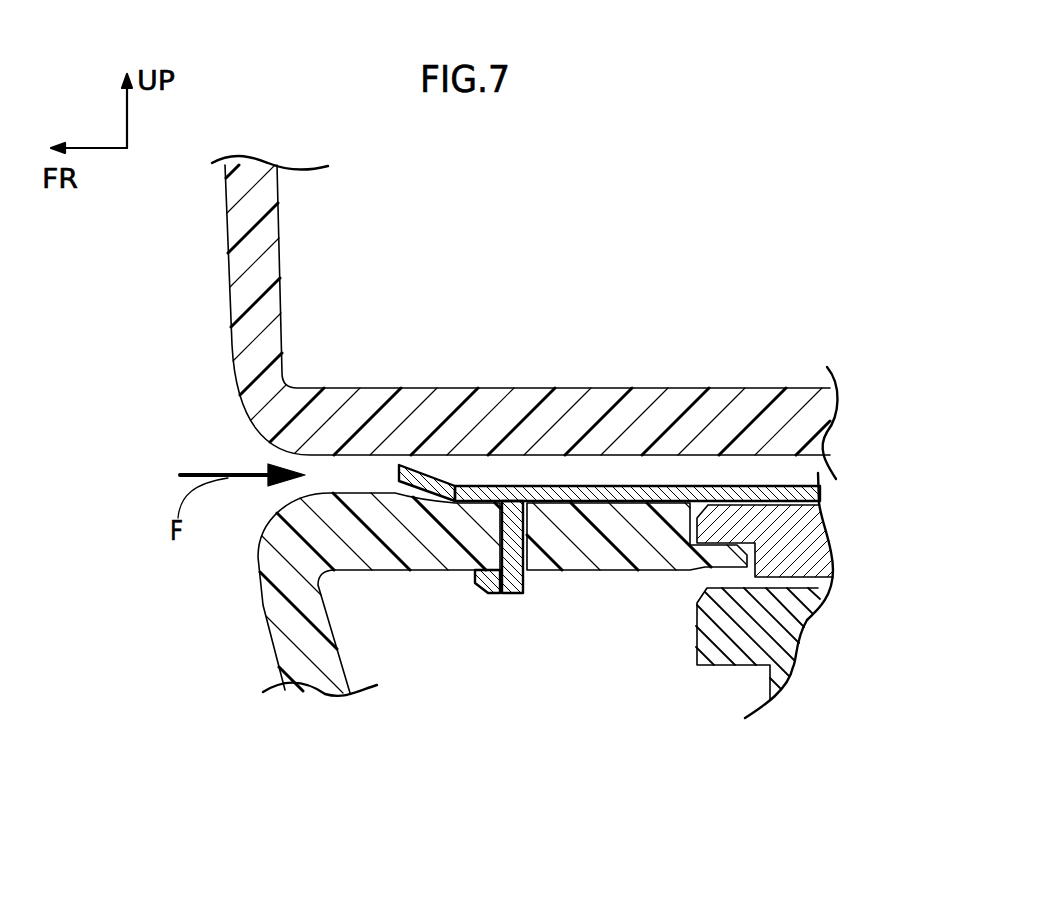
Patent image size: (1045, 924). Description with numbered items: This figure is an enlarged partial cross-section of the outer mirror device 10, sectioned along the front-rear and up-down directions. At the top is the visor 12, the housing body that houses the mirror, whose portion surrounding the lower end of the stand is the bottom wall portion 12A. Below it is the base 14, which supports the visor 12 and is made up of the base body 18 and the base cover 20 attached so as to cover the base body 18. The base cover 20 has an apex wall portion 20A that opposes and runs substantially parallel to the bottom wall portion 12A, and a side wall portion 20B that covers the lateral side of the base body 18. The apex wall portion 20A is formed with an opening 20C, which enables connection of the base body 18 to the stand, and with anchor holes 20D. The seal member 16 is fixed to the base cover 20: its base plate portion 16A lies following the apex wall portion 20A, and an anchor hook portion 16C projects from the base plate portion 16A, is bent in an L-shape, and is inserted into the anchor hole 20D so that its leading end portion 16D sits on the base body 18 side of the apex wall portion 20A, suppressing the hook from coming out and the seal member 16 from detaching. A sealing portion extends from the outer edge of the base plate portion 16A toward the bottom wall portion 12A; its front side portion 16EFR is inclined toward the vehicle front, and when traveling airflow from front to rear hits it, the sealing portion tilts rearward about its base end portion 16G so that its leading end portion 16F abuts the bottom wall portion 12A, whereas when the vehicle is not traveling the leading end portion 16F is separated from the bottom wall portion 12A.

The outer mirror device 10 is at (148, 318).
The visor 12 is at (220, 247).
The bottom wall portion 12A is at (643, 397).
The base 14 is at (680, 718).
The seal member 16 is at (609, 484).
The base plate portion 16A is at (750, 476).
The anchor hook portion 16C is at (532, 590).
The leading end portion 16D is at (485, 594).
The leading end portion 16F is at (400, 466).
The front side portion 16EFR is at (447, 482).
The base end portion 16G is at (462, 490).
The base body 18 is at (718, 666).
The base cover 20 is at (547, 618).
The apex wall portion 20A is at (604, 555).
The side wall portion 20B is at (272, 662).
The opening 20C is at (757, 562).
The anchor hole 20D is at (505, 592).